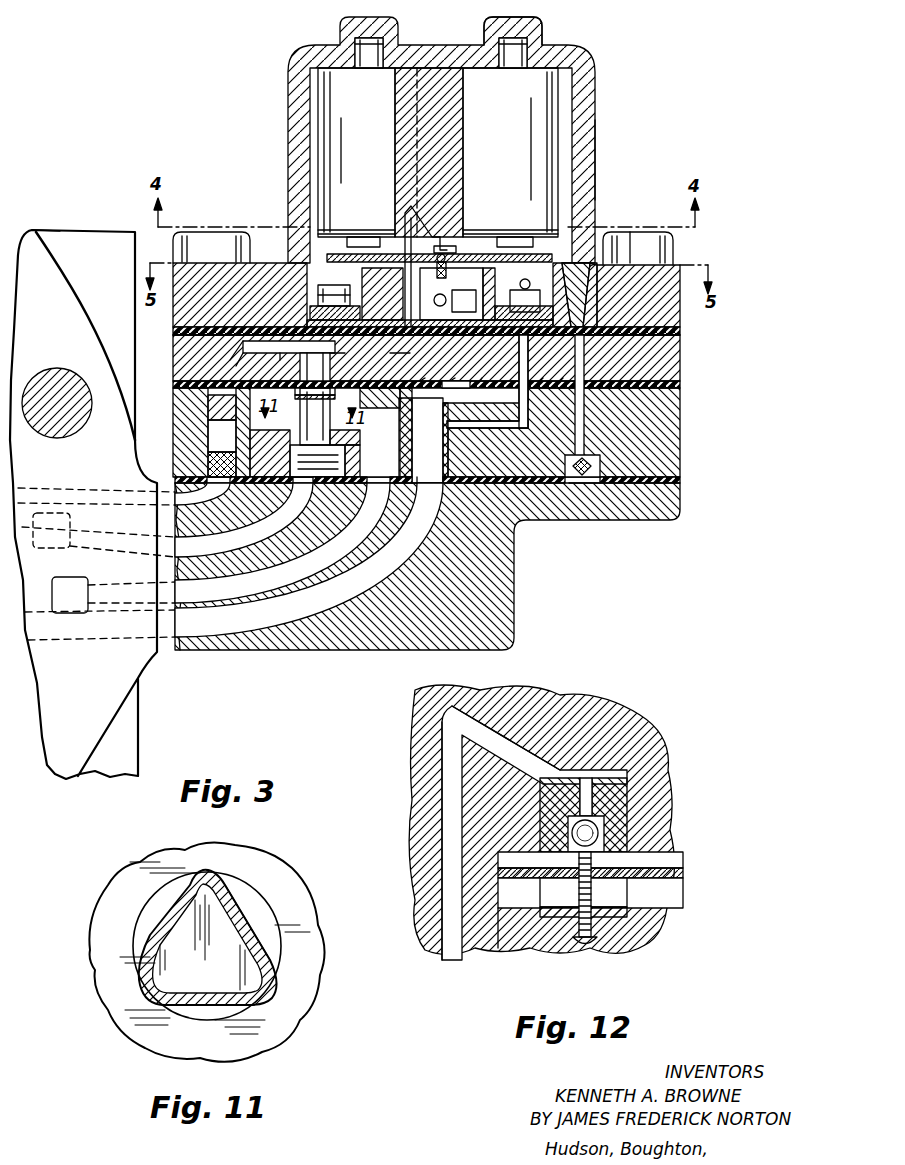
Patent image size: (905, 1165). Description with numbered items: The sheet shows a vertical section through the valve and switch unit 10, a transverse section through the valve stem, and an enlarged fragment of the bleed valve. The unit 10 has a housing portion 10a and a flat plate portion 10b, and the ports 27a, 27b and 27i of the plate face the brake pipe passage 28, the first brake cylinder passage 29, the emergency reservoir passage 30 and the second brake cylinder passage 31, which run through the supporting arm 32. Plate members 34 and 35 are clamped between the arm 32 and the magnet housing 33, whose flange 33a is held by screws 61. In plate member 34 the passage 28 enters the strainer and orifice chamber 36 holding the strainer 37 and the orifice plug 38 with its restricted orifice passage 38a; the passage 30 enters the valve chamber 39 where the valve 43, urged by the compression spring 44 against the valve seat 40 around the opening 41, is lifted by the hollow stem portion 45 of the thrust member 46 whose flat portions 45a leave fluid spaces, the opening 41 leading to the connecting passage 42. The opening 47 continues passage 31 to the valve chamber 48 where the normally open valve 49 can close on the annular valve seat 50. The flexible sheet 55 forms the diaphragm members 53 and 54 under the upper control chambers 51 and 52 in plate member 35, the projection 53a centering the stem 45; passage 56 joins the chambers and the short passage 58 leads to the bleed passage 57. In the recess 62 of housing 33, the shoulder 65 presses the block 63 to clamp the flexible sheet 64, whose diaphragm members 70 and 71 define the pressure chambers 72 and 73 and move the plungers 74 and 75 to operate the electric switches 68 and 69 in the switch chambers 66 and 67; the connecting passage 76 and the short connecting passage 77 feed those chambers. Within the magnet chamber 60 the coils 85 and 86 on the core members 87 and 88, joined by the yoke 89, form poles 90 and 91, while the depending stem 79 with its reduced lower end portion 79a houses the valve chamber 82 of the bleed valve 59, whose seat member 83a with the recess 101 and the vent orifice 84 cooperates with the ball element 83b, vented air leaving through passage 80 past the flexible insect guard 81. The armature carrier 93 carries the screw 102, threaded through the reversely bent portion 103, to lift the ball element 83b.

In FIG. 3, the valve and switch unit 10 is at (60, 309).
In FIG. 3, the housing portion 10a is at (596, 176).
In FIG. 3, the plate portion 10b is at (79, 247).
In FIG. 3, the port 27a is at (60, 530).
In FIG. 3, the port 27b is at (70, 613).
In FIG. 3, the port 27i is at (45, 436).
In FIG. 3, the brake pipe passage 28 is at (217, 501).
In FIG. 3, the first brake cylinder passage 29 is at (348, 560).
In FIG. 3, the emergency reservoir passage 30 is at (283, 540).
In FIG. 3, the second brake cylinder passage 31 is at (395, 598).
In FIG. 3, the supporting arm 32 is at (514, 612).
In FIG. 3, the magnet housing 33 is at (593, 140).
In FIG. 3, the flange 33a is at (680, 318).
In FIG. 3, the plate member 34 is at (680, 418).
In FIG. 3, the plate member 35 is at (680, 345).
In FIG. 3, the strainer and orifice chamber 36 is at (208, 436).
In FIG. 3, the strainer 37 is at (208, 465).
In FIG. 3, the orifice plug 38 is at (208, 392).
In FIG. 3, the restricted orifice passage 38a is at (210, 410).
In FIG. 3, the valve chamber 39 is at (358, 450).
In FIG. 3, the valve seat 40 is at (358, 434).
In FIG. 3, the opening 41 is at (325, 432).
In FIG. 11, the opening 41 is at (250, 900).
In FIG. 3, the connecting passage 42 is at (380, 402).
In FIG. 3, the valve 43 is at (263, 453).
In FIG. 3, the compression spring 44 is at (345, 462).
In FIG. 3, the hollow stem portion 45 is at (298, 402).
In FIG. 11, the hollow stem portion 45 is at (150, 935).
In FIG. 11, the flat portions 45a is at (262, 920).
In FIG. 3, the thrust member 46 is at (294, 360).
In FIG. 3, the opening 47 is at (440, 455).
In FIG. 3, the valve chamber 48 is at (470, 381).
In FIG. 3, the valve 49 is at (487, 365).
In FIG. 3, the annular valve seat 50 is at (423, 440).
In FIG. 3, the upper control chamber 51 is at (347, 360).
In FIG. 3, the upper control chamber 52 is at (432, 365).
In FIG. 3, the diaphragm member 53 is at (319, 365).
In FIG. 3, the projection 53a is at (331, 399).
In FIG. 3, the diaphragm member 54 is at (457, 365).
In FIG. 3, the flexible sheet 55 is at (680, 384).
In FIG. 3, the passage 56 is at (398, 360).
In FIG. 3, the bleed passage 57 is at (242, 352).
In FIG. 12, the bleed passage 57 is at (440, 800).
In FIG. 3, the short passage 58 is at (282, 355).
In FIG. 3, the bleed valve 59 is at (446, 255).
In FIG. 12, the bleed valve 59 is at (632, 846).
In FIG. 3, the magnet chamber 60 is at (318, 150).
In FIG. 3, the screws 61 is at (675, 250).
In FIG. 3, the recess 62 is at (590, 312).
In FIG. 3, the block 63 is at (585, 290).
In FIG. 3, the flexible sheet 64 is at (455, 319).
In FIG. 3, the shoulder 65 is at (618, 258).
In FIG. 3, the switch chamber 66 is at (590, 255).
In FIG. 3, the switch chamber 67 is at (300, 272).
In FIG. 3, the electric switch 68 is at (517, 294).
In FIG. 3, the electric switch 69 is at (350, 286).
In FIG. 3, the diaphragm member 70 is at (541, 363).
In FIG. 3, the diaphragm member 71 is at (352, 315).
In FIG. 3, the pressure chamber 72 is at (564, 363).
In FIG. 3, the pressure chamber 73 is at (300, 335).
In FIG. 3, the plunger 74 is at (533, 305).
In FIG. 3, the plunger 75 is at (382, 294).
In FIG. 3, the connecting passage 76 is at (523, 412).
In FIG. 3, the short connecting passage 77 is at (262, 340).
In FIG. 3, the depending stem 79 is at (450, 133).
In FIG. 12, the depending stem 79 is at (580, 722).
In FIG. 3, the reduced lower end portion 79a is at (447, 294).
In FIG. 3, the passage 80 is at (584, 420).
In FIG. 12, the passage 80 is at (500, 935).
In FIG. 3, the flexible insect guard 81 is at (592, 490).
In FIG. 3, the valve chamber 82 is at (442, 232).
In FIG. 12, the valve chamber 82 is at (627, 765).
In FIG. 3, the seat member 83a is at (450, 246).
In FIG. 12, the seat member 83a is at (620, 778).
In FIG. 3, the ball element 83b is at (446, 268).
In FIG. 12, the ball element 83b is at (640, 820).
In FIG. 3, the vent orifice 84 is at (413, 230).
In FIG. 12, the vent orifice 84 is at (595, 796).
In FIG. 3, the magnet coil 85 is at (550, 118).
In FIG. 3, the magnet coil 86 is at (330, 110).
In FIG. 3, the core member 87 is at (525, 56).
In FIG. 3, the core member 88 is at (386, 50).
In FIG. 3, the yoke 89 is at (486, 48).
In FIG. 3, the magnet pole 90 is at (368, 246).
In FIG. 3, the magnet pole 91 is at (512, 246).
In FIG. 12, the armature carrier 93 is at (660, 878).
In FIG. 12, the recess 101 is at (540, 825).
In FIG. 12, the screw 102 is at (592, 928).
In FIG. 12, the reversely bent portion 103 is at (640, 915).